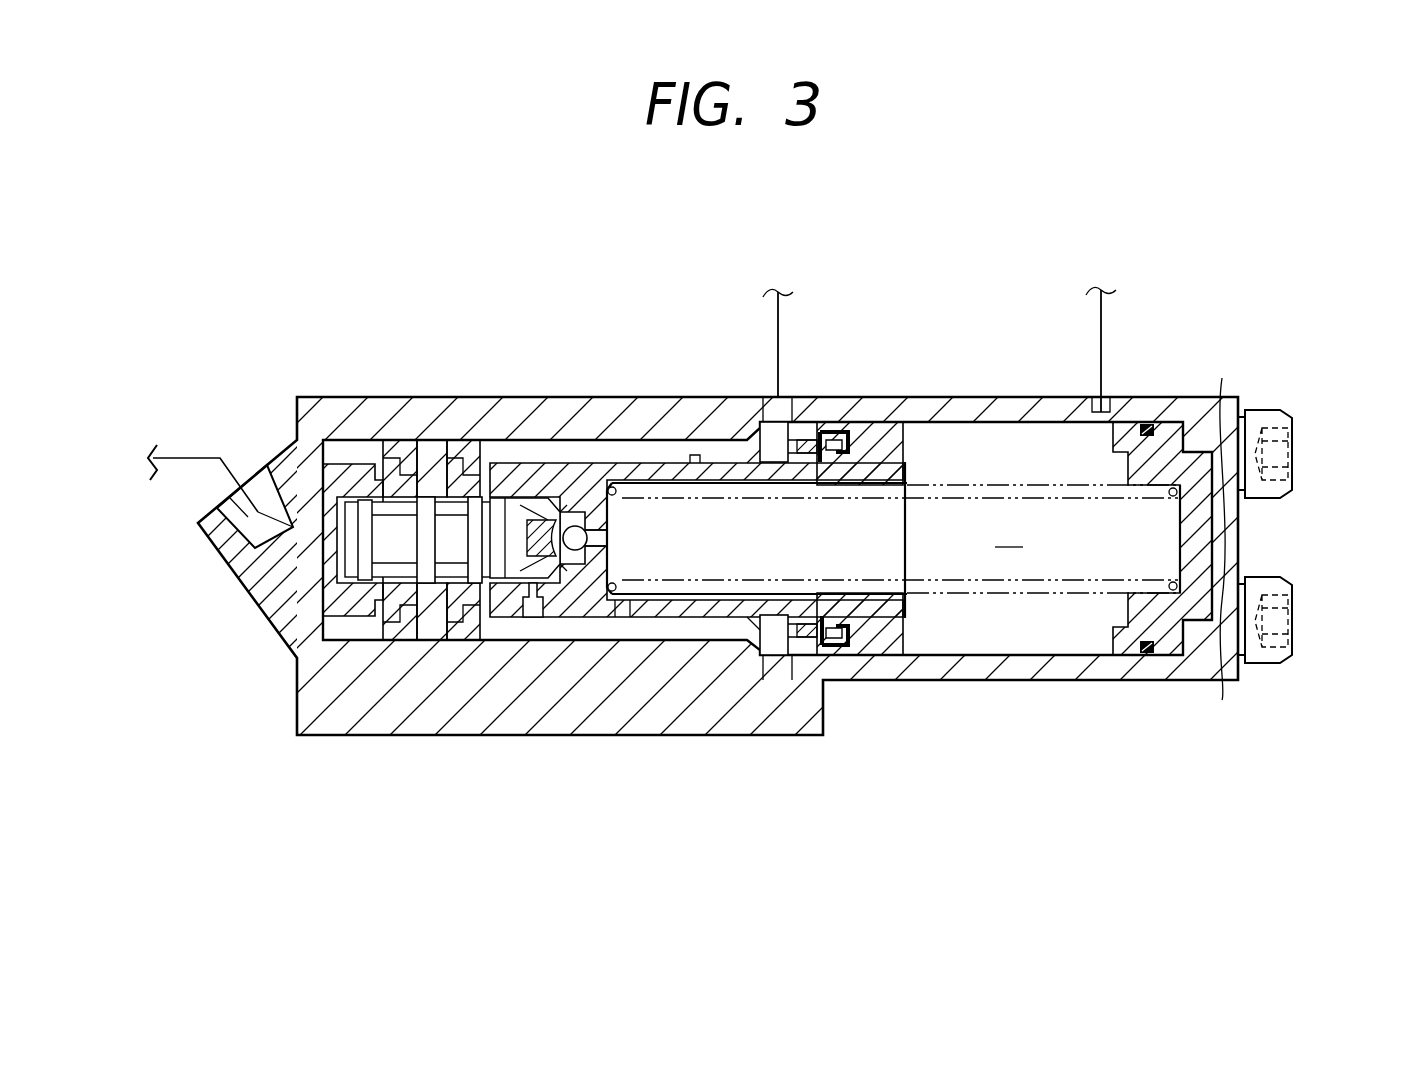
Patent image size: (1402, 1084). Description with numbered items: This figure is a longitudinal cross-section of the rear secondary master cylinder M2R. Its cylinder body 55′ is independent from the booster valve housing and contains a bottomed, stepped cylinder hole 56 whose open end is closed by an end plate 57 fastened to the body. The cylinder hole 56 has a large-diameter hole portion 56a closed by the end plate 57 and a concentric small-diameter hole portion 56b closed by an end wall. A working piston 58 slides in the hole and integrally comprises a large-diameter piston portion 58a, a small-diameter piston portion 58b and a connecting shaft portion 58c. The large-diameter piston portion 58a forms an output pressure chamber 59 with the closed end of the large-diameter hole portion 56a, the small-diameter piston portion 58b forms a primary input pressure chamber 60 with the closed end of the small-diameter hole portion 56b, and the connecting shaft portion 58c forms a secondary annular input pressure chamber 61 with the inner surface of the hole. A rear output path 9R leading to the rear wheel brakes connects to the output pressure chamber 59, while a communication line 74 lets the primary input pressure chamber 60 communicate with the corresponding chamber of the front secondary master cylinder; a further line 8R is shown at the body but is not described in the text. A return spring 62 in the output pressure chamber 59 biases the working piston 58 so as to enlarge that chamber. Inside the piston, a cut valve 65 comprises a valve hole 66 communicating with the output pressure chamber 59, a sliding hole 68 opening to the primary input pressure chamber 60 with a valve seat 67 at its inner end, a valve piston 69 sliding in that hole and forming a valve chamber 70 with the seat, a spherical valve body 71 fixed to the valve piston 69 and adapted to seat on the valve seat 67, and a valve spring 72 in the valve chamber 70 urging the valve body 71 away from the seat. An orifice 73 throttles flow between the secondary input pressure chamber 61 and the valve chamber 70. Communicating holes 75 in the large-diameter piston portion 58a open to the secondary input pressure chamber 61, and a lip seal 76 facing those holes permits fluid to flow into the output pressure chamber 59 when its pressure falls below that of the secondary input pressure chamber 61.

The rear secondary master cylinder M2R is at (373, 398).
The rear hydraulic line 8R is at (776, 318).
The rear output path 9R is at (1103, 325).
The cylinder body 55′ is at (513, 455).
The cylinder hole 56 is at (965, 397).
The large-diameter hole portion 56a is at (1010, 635).
The small-diameter hole portion 56b is at (505, 455).
The end plate 57 is at (1242, 533).
The working piston 58 is at (703, 626).
The large-diameter piston portion 58a is at (808, 420).
The small-diameter piston portion 58b is at (433, 640).
The connecting shaft portion 58c is at (695, 457).
The output pressure chamber 59 is at (893, 538).
The primary input pressure chamber 60 is at (318, 669).
The secondary annular input pressure chamber 61 is at (623, 633).
The return spring 62 is at (1172, 494).
The cut valve 65 is at (550, 490).
The valve hole 66 is at (620, 532).
The valve seat 67 is at (590, 543).
The sliding hole 68 is at (345, 565).
The valve piston 69 is at (343, 528).
The valve chamber 70 is at (517, 613).
The spherical valve body 71 is at (563, 510).
The valve spring 72 is at (578, 582).
The orifice 73 is at (527, 617).
The communication line 74 is at (153, 452).
The communicating holes 75 is at (803, 635).
The lip seal 76 is at (845, 656).